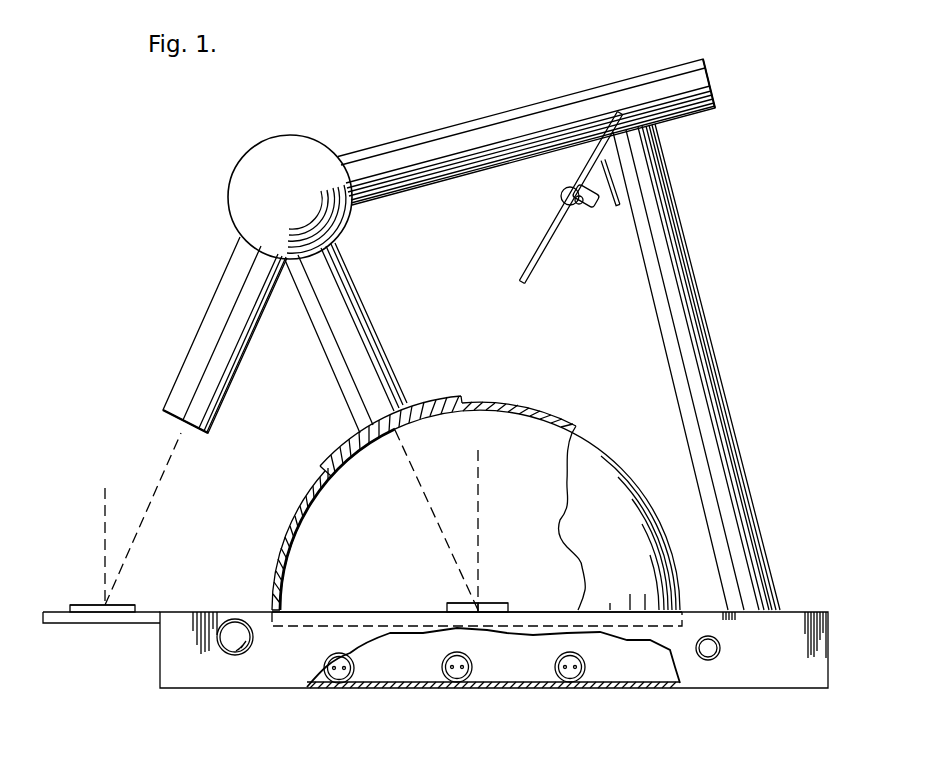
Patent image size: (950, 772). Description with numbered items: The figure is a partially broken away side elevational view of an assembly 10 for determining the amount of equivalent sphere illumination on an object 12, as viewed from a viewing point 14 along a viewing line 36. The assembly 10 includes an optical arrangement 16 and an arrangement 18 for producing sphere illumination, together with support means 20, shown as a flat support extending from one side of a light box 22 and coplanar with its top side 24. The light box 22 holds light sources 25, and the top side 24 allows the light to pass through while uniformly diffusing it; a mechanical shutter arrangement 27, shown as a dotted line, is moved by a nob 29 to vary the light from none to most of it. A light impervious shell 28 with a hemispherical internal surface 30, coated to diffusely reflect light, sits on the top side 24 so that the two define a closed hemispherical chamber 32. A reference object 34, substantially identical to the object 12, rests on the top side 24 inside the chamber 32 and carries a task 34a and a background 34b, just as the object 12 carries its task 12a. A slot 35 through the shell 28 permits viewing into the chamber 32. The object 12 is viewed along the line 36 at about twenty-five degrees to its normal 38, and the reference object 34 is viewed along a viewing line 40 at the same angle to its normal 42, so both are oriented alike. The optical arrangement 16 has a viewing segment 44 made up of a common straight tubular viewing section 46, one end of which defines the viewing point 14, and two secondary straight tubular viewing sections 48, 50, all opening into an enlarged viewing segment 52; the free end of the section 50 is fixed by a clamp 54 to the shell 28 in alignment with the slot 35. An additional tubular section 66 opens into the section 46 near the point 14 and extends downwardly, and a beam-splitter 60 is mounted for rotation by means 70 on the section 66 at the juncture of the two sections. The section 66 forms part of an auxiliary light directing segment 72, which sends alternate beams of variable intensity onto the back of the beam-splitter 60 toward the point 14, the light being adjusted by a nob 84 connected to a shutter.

The assembly 10 is at (415, 50).
The object 12 is at (125, 607).
The task 12a is at (115, 605).
The viewing point 14 is at (706, 76).
The optical arrangement 16 is at (773, 76).
The arrangement for producing sphere illumination 18 is at (262, 698).
The support means 20 is at (108, 624).
The light box 22 is at (175, 673).
The top side 24 is at (365, 611).
The light sources 25 is at (440, 672).
The mechanical shutter arrangement 27 is at (320, 628).
The light impervious shell 28 is at (597, 453).
The nob 29 is at (232, 628).
The hemispherical internal surface 30 is at (308, 507).
The hemispherical chamber 32 is at (530, 510).
The reference object 34 is at (510, 606).
The task 34a is at (462, 605).
The background 34b is at (488, 605).
The slot 35 is at (388, 434).
The viewing line 36 is at (163, 470).
The normal 38 is at (105, 540).
The viewing line 40 is at (405, 456).
The normal 42 is at (472, 452).
The viewing segment 44 is at (487, 76).
The common straight tubular viewing section 46 is at (430, 135).
The secondary straight tubular viewing section 48 is at (185, 372).
The secondary straight tubular viewing section 50 is at (330, 322).
The enlarged viewing segment 52 is at (302, 152).
The clamp 54 is at (440, 397).
The beam-splitter 60 is at (528, 284).
The tubular section 66 is at (662, 336).
The mounting means 70 is at (597, 207).
The auxiliary light directing segment 72 is at (777, 512).
The nob 84 is at (708, 660).